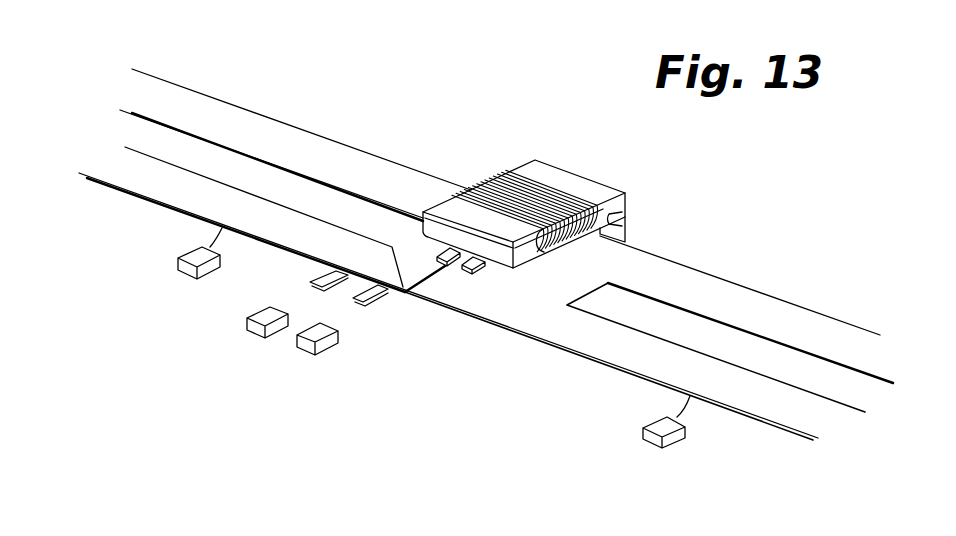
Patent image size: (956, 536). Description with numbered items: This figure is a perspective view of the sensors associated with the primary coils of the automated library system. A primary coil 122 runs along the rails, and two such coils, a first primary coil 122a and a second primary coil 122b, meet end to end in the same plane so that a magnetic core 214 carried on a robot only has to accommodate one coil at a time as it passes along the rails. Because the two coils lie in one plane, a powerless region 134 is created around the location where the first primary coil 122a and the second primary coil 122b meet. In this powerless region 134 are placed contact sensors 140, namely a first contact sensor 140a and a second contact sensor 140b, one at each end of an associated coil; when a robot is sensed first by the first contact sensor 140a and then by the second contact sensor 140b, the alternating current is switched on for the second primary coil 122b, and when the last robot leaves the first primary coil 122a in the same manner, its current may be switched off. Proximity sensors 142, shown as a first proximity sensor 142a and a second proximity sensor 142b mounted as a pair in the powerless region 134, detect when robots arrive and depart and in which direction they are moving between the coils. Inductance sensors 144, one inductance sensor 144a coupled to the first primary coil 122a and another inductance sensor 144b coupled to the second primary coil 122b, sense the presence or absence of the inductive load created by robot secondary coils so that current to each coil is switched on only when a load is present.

The primary coil 122 is at (486, 227).
The first primary coil 122a is at (224, 88).
The second primary coil 122b is at (805, 297).
The powerless region 134 is at (496, 352).
The contact sensor 140 is at (476, 262).
The first contact sensor 140a is at (445, 251).
The second contact sensor 140b is at (476, 272).
The proximity sensor 142 is at (239, 355).
The first proximity sensor 142a is at (253, 338).
The second proximity sensor 142b is at (303, 354).
The inductance sensor 144 is at (382, 351).
The first inductance sensor 144a is at (188, 279).
The second inductance sensor 144b is at (648, 448).
The magnetic core 214 is at (578, 184).